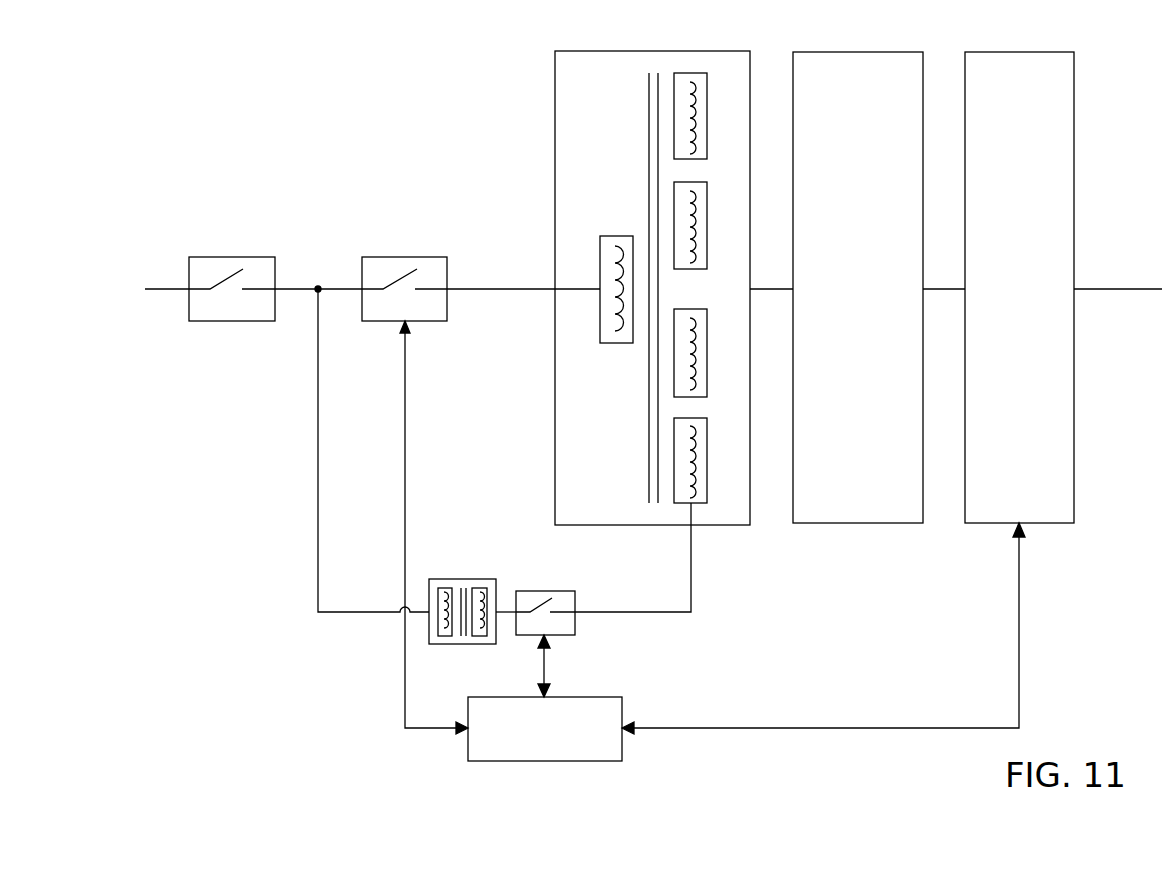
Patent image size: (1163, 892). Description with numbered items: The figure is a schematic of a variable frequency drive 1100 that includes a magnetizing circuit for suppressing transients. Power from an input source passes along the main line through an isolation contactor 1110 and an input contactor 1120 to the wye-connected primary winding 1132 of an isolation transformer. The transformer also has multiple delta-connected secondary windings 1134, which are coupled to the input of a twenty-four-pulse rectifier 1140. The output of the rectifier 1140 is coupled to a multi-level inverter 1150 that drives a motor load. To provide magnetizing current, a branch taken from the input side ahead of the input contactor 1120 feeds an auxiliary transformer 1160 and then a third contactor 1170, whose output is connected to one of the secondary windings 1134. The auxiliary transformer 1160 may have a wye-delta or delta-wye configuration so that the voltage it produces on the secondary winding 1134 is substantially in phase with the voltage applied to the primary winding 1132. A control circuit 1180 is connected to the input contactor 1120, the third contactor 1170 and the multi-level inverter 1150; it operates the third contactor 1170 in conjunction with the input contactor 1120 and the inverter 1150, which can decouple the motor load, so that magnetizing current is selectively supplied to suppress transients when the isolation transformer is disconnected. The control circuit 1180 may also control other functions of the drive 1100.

The variable frequency drive 1100 is at (317, 138).
The isolation contactor 1110 is at (232, 257).
The input contactor 1120 is at (404, 257).
The primary winding 1132 is at (616, 236).
The secondary windings 1134 is at (691, 73).
The 24-pulse rectifier 1140 is at (858, 523).
The multi-level inverter 1150 is at (1020, 52).
The auxiliary transformer 1160 is at (462, 579).
The third contactor 1170 is at (545, 591).
The control circuit 1180 is at (545, 761).